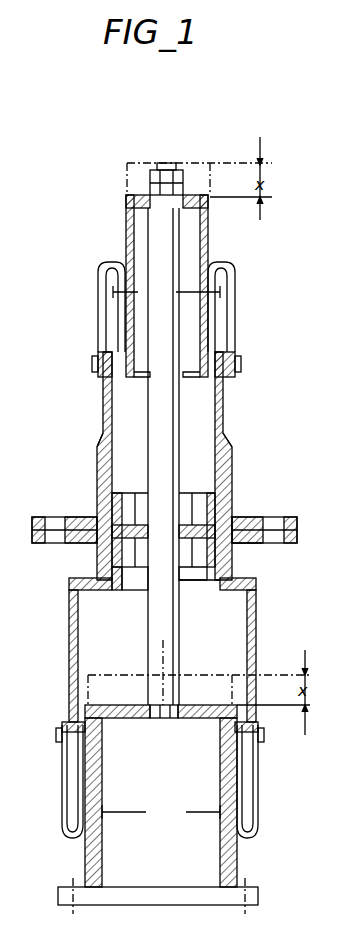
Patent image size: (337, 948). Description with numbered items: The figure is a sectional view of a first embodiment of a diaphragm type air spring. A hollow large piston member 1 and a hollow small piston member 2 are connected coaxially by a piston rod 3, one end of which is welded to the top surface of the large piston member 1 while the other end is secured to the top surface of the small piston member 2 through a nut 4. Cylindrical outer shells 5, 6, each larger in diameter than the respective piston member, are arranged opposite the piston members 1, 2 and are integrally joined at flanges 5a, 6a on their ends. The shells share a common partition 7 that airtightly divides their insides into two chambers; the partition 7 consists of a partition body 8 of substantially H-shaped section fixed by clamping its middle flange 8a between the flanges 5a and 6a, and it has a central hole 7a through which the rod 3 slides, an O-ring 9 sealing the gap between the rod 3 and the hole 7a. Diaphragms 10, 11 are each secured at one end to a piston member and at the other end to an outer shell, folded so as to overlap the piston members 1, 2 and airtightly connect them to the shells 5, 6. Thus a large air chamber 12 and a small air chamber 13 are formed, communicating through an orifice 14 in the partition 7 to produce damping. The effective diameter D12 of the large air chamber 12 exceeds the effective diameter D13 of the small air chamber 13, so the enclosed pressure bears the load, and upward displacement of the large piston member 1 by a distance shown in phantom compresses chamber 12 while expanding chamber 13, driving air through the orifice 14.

The large piston member 1 is at (233, 856).
The small piston member 2 is at (208, 237).
The piston rod 3 is at (173, 430).
The nut 4 is at (180, 192).
The large outer shell 5 is at (257, 628).
The flange 5a is at (248, 545).
The small outer shell 6 is at (232, 447).
The flange 6a is at (250, 518).
The partition 7 is at (233, 470).
The hole 7a is at (176, 540).
The partition body 8 is at (122, 505).
The flange 8a is at (92, 545).
The O-ring 9 is at (106, 433).
The diaphragm 10 is at (258, 805).
The diaphragm 11 is at (235, 322).
The large air chamber 12 is at (122, 661).
The small air chamber 13 is at (137, 409).
The orifice 14 is at (128, 568).
The effective diameter of the large air chamber D12 is at (161, 813).
The effective diameter of the small air chamber D13 is at (166, 293).